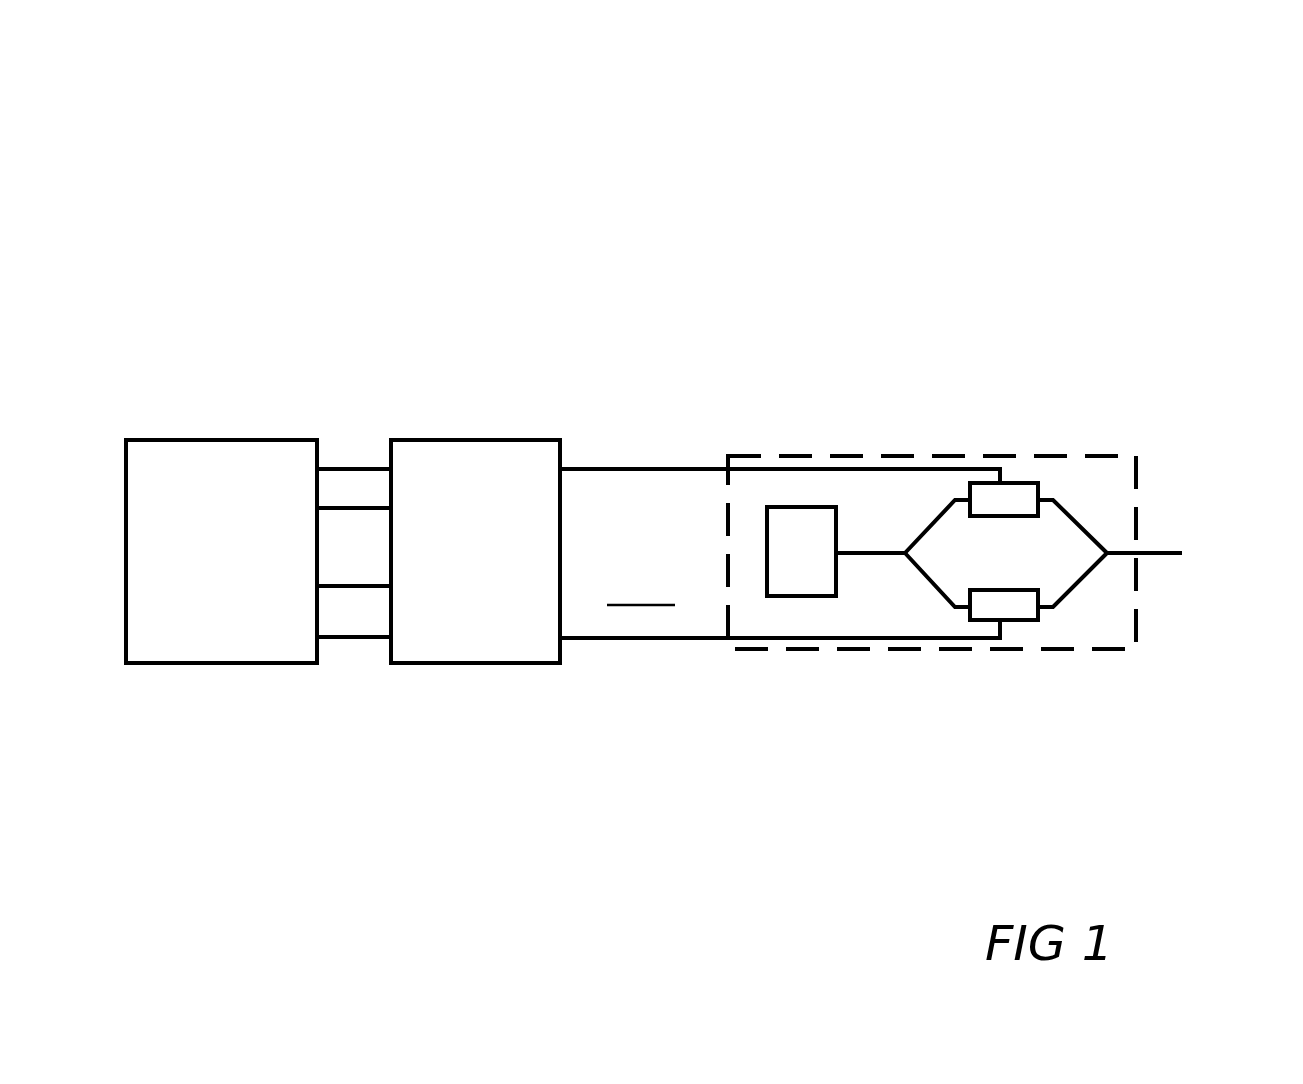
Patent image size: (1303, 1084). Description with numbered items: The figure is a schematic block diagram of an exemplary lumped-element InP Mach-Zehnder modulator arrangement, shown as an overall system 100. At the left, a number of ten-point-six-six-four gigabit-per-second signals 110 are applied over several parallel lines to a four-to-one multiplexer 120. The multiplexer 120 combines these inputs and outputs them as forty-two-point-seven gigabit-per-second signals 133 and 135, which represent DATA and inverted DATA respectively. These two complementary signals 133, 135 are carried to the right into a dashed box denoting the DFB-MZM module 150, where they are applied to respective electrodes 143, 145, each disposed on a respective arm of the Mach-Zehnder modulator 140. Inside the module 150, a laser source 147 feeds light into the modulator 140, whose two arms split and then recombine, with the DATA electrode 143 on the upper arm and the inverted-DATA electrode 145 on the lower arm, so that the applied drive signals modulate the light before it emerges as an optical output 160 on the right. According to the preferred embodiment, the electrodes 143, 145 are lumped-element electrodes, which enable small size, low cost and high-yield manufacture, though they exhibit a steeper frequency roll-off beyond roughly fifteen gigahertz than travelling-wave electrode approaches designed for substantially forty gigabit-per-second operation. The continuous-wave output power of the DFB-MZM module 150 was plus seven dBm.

The optical transmitter system 100 is at (1278, 76).
The 10.664 Gb/s signals 110 is at (243, 437).
The 4:1 multiplexer 120 is at (477, 437).
The 42.7-Gb/s DATA signal 133 is at (670, 467).
The 42.7-Gb/s inverted DATA signal 135 is at (673, 643).
The Mach-Zehnder modulator 140 is at (1006, 555).
The lumped-element electrode 143 is at (1030, 490).
The lumped-element electrode 145 is at (1020, 613).
The laser source 147 is at (836, 551).
The DFB-MZM module 150 is at (950, 650).
The optical output 160 is at (1167, 555).